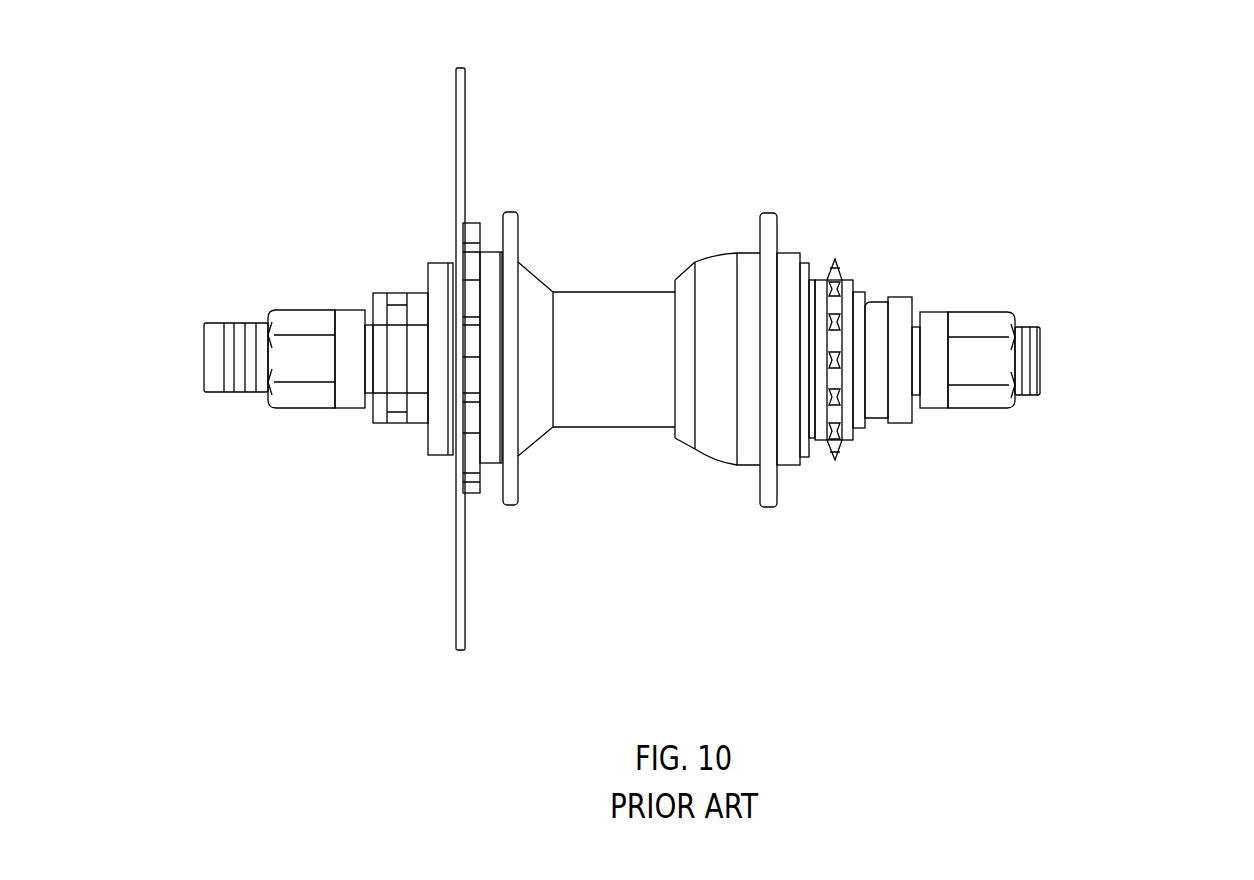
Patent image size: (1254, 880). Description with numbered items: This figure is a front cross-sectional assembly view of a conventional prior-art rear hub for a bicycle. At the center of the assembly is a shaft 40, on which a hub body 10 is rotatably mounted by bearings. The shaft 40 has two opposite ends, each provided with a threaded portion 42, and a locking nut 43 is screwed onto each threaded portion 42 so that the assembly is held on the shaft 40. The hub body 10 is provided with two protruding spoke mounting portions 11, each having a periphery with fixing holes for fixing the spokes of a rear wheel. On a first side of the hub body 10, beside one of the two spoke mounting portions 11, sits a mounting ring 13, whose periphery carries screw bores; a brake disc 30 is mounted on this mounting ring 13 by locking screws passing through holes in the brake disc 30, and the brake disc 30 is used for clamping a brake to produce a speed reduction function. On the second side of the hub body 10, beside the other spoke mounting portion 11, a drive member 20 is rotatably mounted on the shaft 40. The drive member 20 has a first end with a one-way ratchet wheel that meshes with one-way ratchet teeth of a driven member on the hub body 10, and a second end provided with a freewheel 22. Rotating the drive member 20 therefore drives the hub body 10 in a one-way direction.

The hub body 10 is at (647, 349).
The spoke mounting portions 11 is at (512, 233).
The mounting ring 13 is at (472, 248).
The drive member 20 is at (847, 419).
The freewheel 22 is at (836, 257).
The brake disc 30 is at (454, 106).
The shaft 40 is at (684, 343).
The threaded portion 42 is at (227, 352).
The locking nut 43 is at (303, 395).